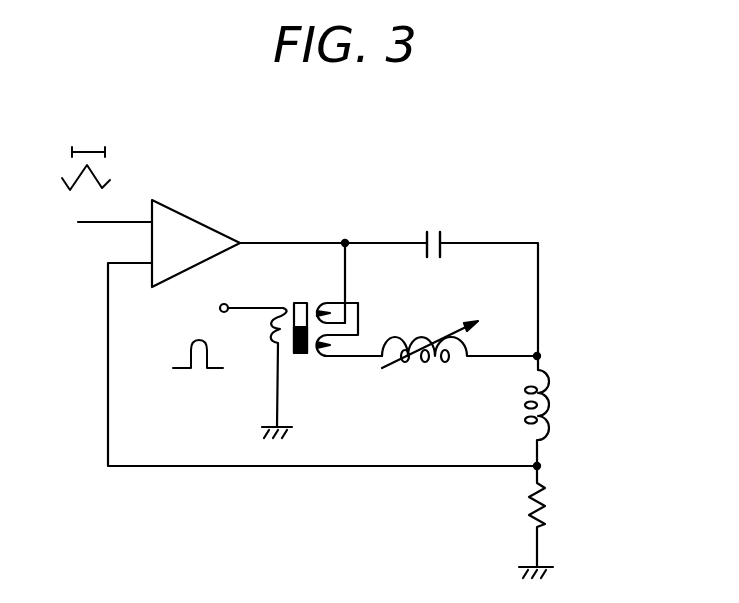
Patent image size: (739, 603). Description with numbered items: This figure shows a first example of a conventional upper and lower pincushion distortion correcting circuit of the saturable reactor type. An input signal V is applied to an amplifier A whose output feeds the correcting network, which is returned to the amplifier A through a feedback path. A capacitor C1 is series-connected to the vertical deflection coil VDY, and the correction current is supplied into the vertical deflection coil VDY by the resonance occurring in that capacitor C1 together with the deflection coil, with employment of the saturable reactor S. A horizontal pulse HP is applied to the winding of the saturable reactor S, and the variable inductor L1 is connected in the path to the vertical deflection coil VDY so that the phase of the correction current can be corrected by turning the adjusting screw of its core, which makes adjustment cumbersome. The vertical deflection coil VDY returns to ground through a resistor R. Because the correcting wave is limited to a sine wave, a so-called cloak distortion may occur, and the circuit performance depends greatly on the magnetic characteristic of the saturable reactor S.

The vertical input signal (triangular waveform) V is at (86, 154).
The amplifier A is at (200, 232).
The capacitor C1 is at (433, 225).
The saturable reactor S is at (301, 352).
The variable inductor L1 is at (459, 333).
The vertical deflection coil VDY is at (565, 405).
The horizontal pulse HP is at (198, 371).
The resistor R is at (544, 522).